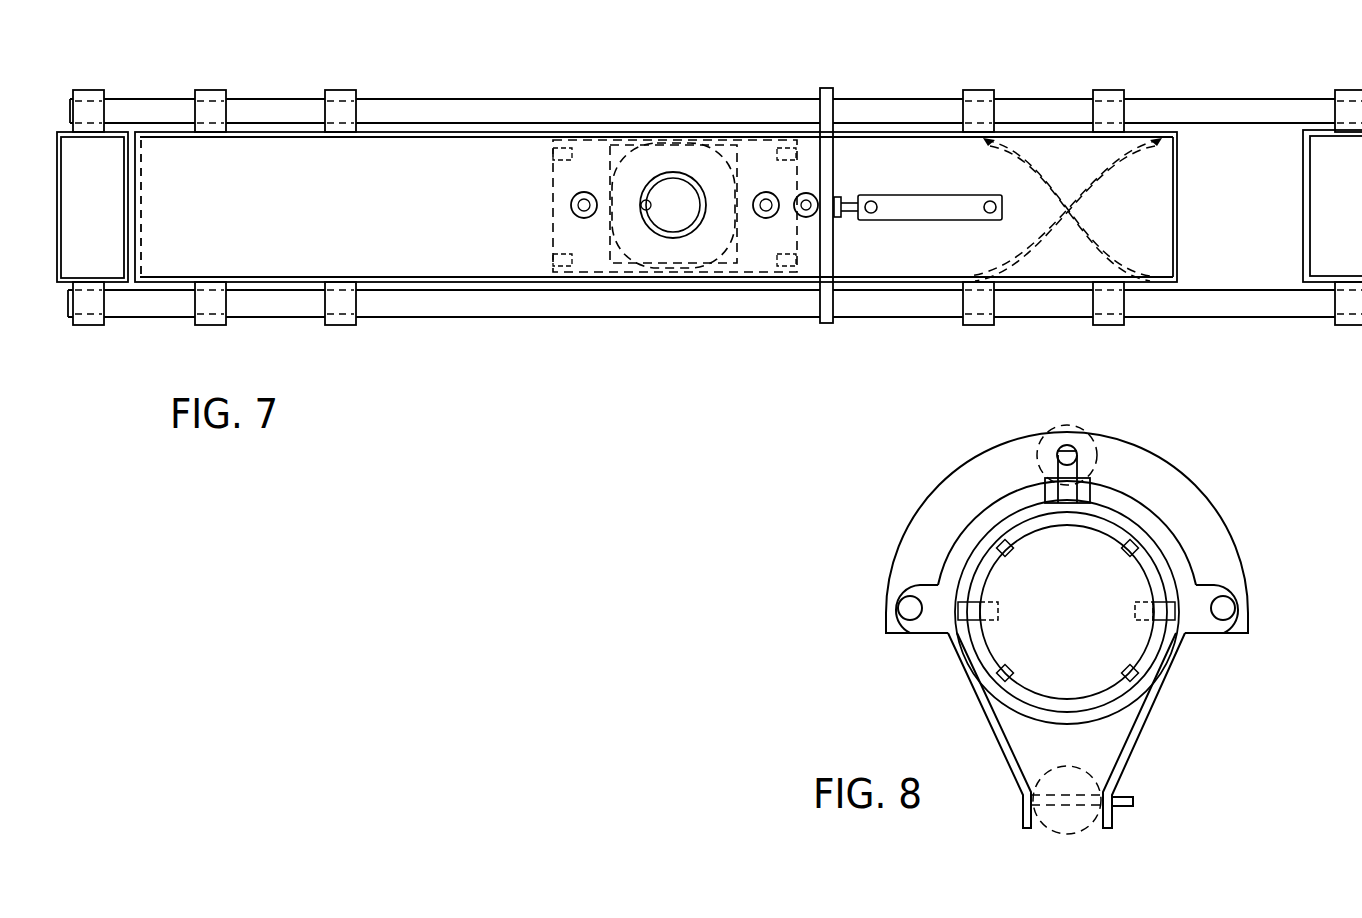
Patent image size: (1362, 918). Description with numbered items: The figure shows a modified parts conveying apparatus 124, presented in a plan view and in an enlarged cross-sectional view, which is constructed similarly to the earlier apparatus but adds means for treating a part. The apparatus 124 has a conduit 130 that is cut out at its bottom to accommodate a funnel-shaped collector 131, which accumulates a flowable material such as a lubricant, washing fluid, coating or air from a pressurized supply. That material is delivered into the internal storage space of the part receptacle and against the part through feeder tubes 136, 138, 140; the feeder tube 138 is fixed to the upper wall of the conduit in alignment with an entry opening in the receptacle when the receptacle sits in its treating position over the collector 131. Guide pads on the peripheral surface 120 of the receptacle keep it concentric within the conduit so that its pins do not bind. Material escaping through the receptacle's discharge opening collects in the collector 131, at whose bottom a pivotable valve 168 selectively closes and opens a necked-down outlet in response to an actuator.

In FIG. 7, the parts conveying apparatus 124 is at (1140, 66).
In FIG. 8, the parts conveying apparatus 124 is at (1264, 559).
In FIG. 7, the conduit 130 is at (395, 158).
In FIG. 7, the peripheral surface 120 is at (591, 167).
In FIG. 8, the peripheral surface 120 is at (1003, 640).
In FIG. 7, the funnel-shaped collector 131 is at (741, 191).
In FIG. 8, the funnel-shaped collector 131 is at (1128, 752).
In FIG. 7, the feeder tube 136 is at (586, 232).
In FIG. 7, the feeder tube 138 is at (660, 216).
In FIG. 7, the feeder tube 140 is at (765, 232).
In FIG. 8, the pivotable valve 168 is at (1068, 832).